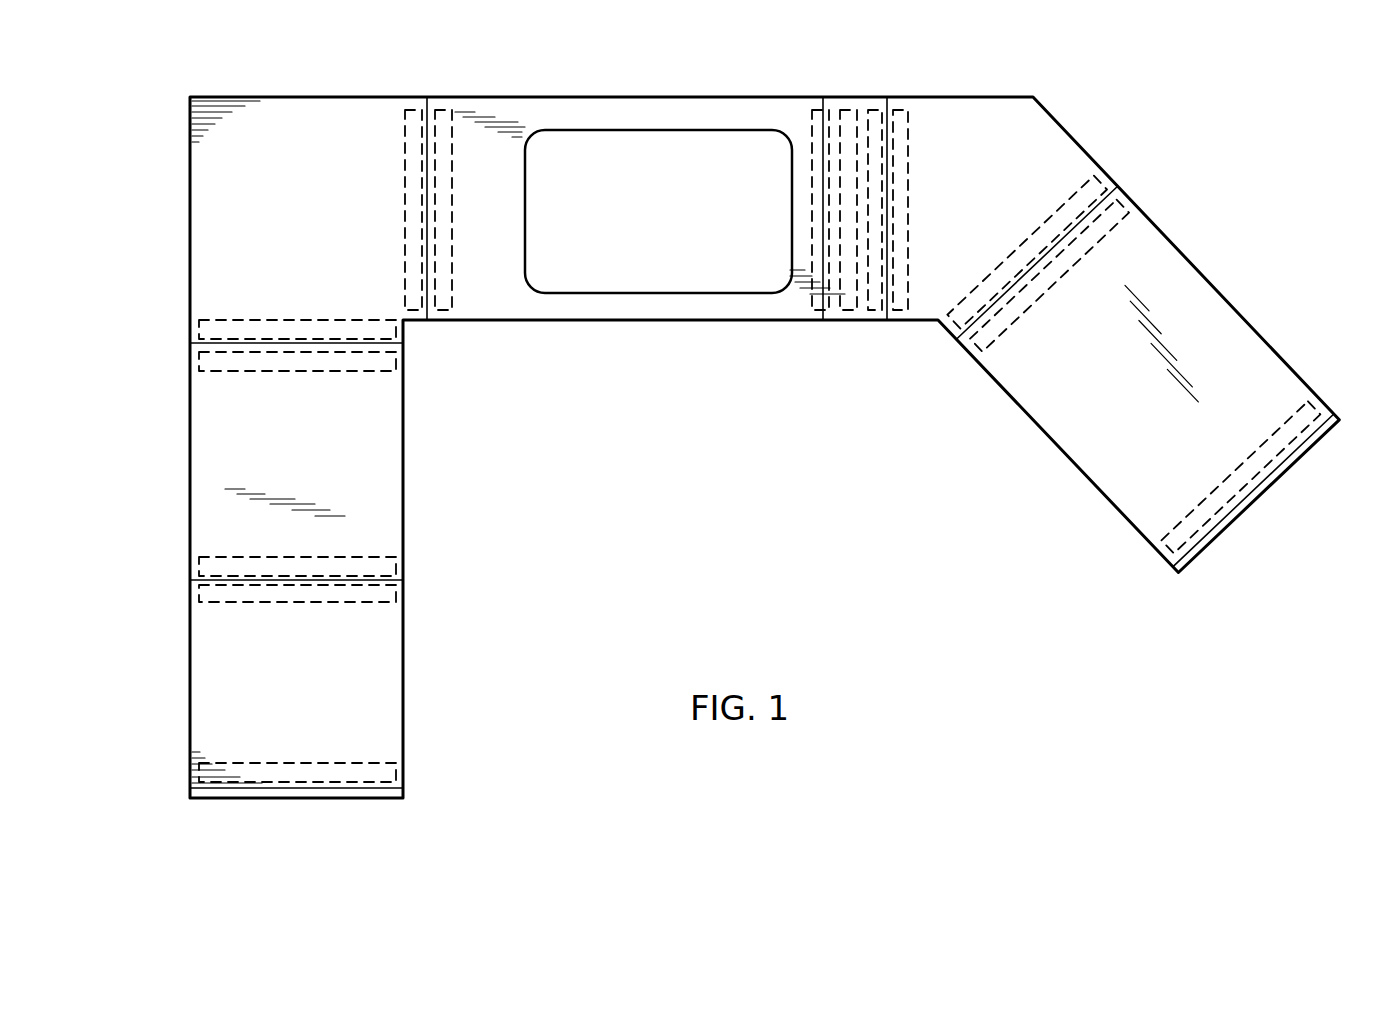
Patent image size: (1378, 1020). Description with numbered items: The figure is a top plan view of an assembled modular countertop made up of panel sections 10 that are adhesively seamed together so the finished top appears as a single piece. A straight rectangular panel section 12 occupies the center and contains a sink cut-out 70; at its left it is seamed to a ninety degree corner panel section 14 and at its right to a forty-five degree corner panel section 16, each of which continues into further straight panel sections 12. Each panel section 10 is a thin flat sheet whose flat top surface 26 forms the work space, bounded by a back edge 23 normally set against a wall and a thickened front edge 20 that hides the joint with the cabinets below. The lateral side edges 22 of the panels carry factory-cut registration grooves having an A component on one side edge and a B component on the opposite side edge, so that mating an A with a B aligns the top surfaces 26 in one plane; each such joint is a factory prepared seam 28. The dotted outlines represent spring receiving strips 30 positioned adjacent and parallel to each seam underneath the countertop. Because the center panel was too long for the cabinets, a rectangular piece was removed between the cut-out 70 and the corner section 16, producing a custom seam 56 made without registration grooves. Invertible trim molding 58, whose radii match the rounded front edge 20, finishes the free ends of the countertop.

The panel sections 10 is at (715, 420).
The straight rectangular panel section 12 is at (660, 108).
The 90 degree corner panel section 14 is at (298, 113).
The 45 degree corner panel section 16 is at (1038, 130).
The thickened front edge 20 is at (405, 430).
The lateral side edge 22 is at (425, 158).
The back edge 23 is at (190, 210).
The top surface 26 is at (378, 673).
The factory prepared seam 28 is at (428, 97).
The spring receiving strip 30 is at (900, 110).
The custom seam 56 is at (823, 98).
The invertible trim molding 58 is at (302, 798).
The sink cut-out 70 is at (690, 270).
The A component of registration grooves A is at (445, 97).
The B component of registration grooves B is at (428, 97).